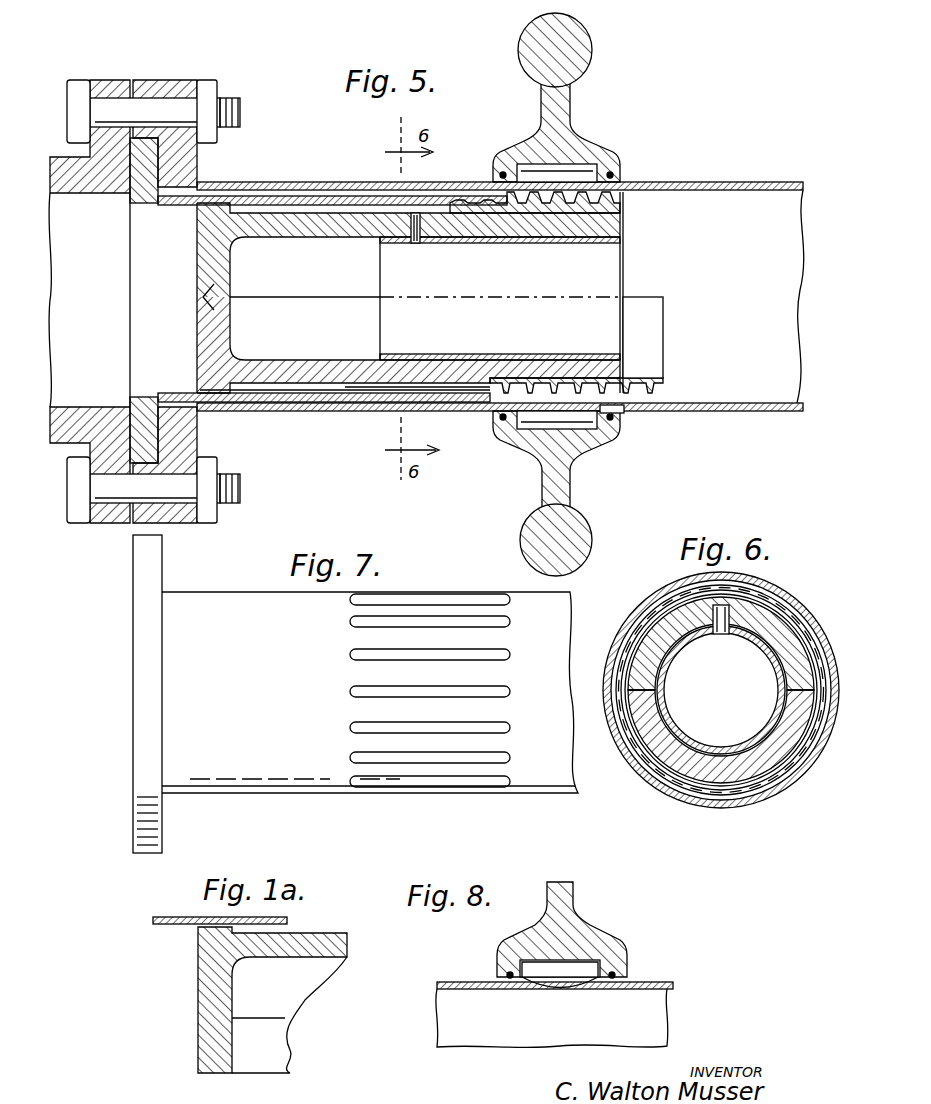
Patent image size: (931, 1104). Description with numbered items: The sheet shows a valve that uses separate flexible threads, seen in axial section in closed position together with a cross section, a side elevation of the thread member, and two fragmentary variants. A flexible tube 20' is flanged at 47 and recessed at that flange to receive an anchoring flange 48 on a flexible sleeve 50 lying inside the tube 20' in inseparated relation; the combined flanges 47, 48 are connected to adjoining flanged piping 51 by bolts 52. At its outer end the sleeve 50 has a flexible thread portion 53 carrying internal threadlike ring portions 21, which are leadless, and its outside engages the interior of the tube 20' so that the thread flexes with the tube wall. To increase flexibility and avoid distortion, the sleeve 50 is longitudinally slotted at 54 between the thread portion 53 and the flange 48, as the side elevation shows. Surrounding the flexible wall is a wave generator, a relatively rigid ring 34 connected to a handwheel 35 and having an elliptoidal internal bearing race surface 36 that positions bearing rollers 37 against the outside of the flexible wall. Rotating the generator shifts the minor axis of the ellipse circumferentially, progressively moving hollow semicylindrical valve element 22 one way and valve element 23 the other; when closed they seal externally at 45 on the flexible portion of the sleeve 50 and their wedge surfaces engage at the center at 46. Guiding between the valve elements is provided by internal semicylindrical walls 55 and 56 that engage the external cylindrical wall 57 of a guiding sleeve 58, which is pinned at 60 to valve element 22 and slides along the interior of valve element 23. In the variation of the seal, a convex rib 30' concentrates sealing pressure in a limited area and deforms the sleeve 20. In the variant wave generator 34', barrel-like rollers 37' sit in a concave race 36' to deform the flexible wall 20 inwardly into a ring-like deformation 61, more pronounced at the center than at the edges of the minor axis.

In FIG. 1A, the flexible wall 20 is at (212, 908).
In FIG. 8, the flexible wall 20 is at (578, 995).
In FIG. 5, the flexible tube 20' is at (500, 276).
In FIG. 6, the flexible tube 20' is at (721, 685).
In FIG. 5, the internal threadlike ring portions 21 is at (488, 398).
In FIG. 6, the internal threadlike ring portions 21 is at (790, 760).
In FIG. 5, the hollow semicylindrical valve element having screw surfaces 22 is at (625, 219).
In FIG. 6, the hollow semicylindrical valve element having screw surfaces 22 is at (672, 628).
In FIG. 5, the hollow semicylindrical valve element having screw surfaces 23 is at (664, 380).
In FIG. 6, the hollow semicylindrical valve element having screw surfaces 23 is at (700, 765).
In FIG. 1A, the convex rib 30' is at (245, 1000).
In FIG. 5, the wave generator 34 is at (567, 97).
In FIG. 8, the wave generator 34' is at (582, 929).
In FIG. 5, the handwheel 35 is at (592, 540).
In FIG. 5, the elliptoidal internal bearing race surface 36 is at (504, 451).
In FIG. 8, the concave race 36' is at (485, 948).
In FIG. 5, the bearing rollers 37 is at (610, 448).
In FIG. 8, the barrel-like rollers 37' is at (559, 997).
In FIG. 5, the external seal 45 is at (198, 215).
In FIG. 5, the wedge surface engagement 46 is at (203, 297).
In FIG. 5, the flange 47 is at (185, 168).
In FIG. 5, the anchoring flange 48 is at (132, 192).
In FIG. 7, the anchoring flange 48 is at (147, 856).
In FIG. 5, the flexible sleeve 50 is at (300, 196).
In FIG. 7, the flexible sleeve 50 is at (370, 692).
In FIG. 6, the flexible sleeve 50 is at (768, 793).
In FIG. 5, the flanged piping 51 is at (108, 82).
In FIG. 5, the bolts 52 is at (205, 88).
In FIG. 5, the flexible thread portion 53 is at (640, 412).
In FIG. 5, the longitudinal slots 54 is at (386, 400).
In FIG. 7, the longitudinal slots 54 is at (428, 600).
In FIG. 5, the internal semicylindrical wall 55 is at (345, 232).
In FIG. 6, the internal semicylindrical wall 55 is at (680, 653).
In FIG. 5, the internal semicylindrical wall 56 is at (300, 360).
In FIG. 6, the internal semicylindrical wall 56 is at (657, 745).
In FIG. 5, the external cylindrical wall 57 is at (619, 248).
In FIG. 6, the external cylindrical wall 57 is at (718, 634).
In FIG. 5, the guiding sleeve 58 is at (625, 288).
In FIG. 6, the guiding sleeve 58 is at (760, 633).
In FIG. 5, the pin 60 is at (422, 243).
In FIG. 6, the pin 60 is at (712, 620).
In FIG. 8, the ring-like deformation 61 is at (575, 992).